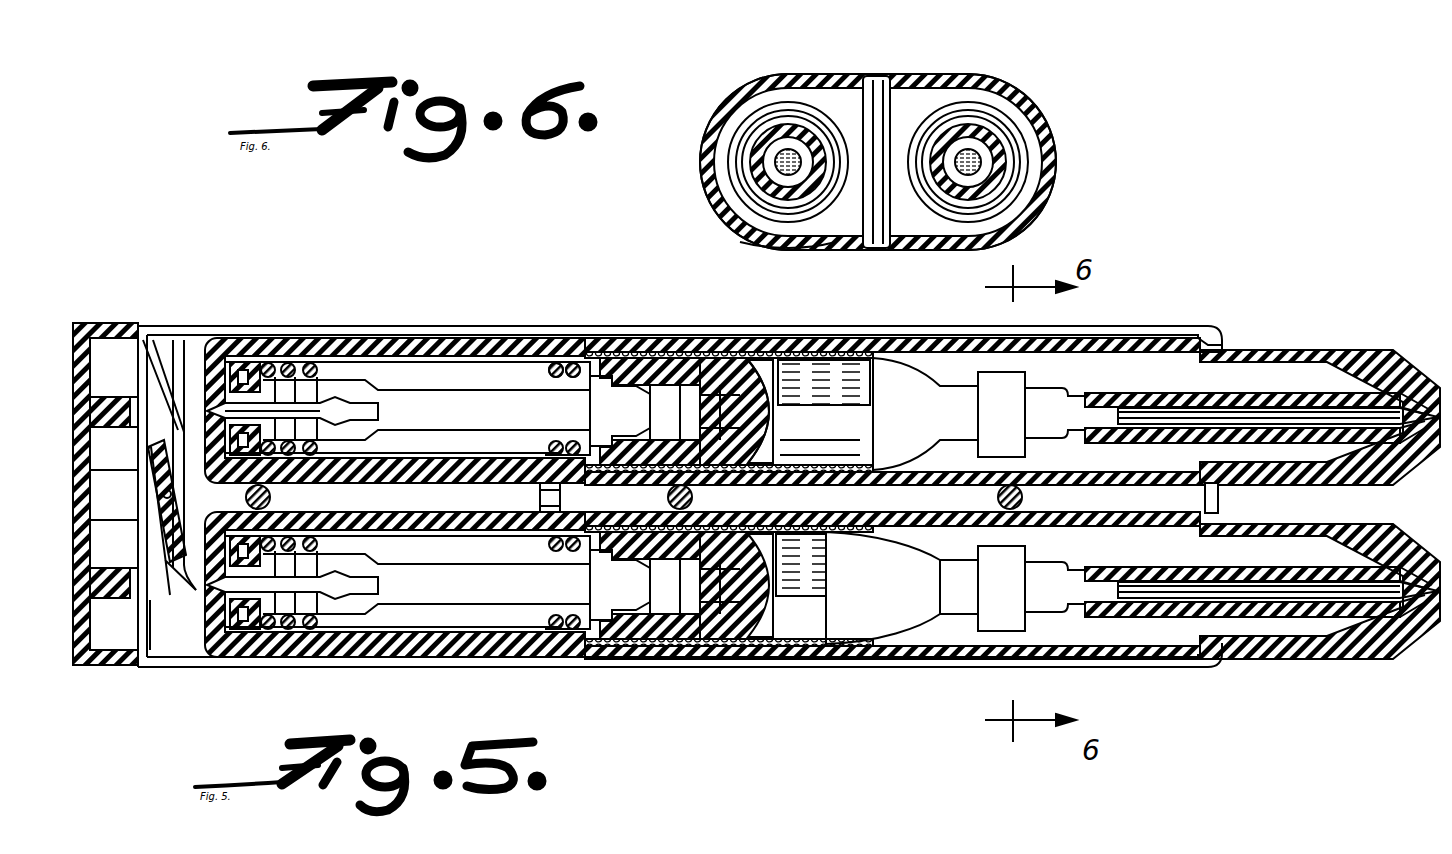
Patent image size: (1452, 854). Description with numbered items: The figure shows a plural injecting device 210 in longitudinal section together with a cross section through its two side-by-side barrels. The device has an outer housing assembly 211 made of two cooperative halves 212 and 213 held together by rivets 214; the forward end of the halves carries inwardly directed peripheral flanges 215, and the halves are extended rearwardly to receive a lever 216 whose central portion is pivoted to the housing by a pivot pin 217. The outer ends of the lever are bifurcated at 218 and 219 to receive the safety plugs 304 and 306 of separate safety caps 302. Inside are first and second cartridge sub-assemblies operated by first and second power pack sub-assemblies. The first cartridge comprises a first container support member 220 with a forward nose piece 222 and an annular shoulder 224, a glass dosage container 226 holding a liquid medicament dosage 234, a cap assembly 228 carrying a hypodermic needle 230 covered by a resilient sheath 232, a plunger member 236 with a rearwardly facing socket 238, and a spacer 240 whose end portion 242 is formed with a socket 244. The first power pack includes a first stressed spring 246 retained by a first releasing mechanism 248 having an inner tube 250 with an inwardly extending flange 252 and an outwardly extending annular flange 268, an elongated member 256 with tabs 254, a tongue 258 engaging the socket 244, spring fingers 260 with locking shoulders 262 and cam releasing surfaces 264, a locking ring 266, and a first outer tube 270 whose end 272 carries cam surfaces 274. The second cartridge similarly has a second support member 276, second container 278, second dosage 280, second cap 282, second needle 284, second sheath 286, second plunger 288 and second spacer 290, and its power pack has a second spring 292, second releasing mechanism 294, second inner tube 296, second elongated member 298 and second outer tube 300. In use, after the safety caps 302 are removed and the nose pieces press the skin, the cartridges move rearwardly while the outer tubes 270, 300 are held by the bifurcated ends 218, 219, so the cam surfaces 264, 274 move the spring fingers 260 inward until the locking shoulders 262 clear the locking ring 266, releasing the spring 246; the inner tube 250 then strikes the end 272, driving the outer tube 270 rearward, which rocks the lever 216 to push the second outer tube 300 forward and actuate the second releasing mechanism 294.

In FIG. 6, the plural injecting device 210 is at (1043, 108).
In FIG. 5, the plural injecting device 210 is at (545, 330).
In FIG. 6, the outer housing assembly 211 is at (745, 96).
In FIG. 5, the outer housing assembly 211 is at (690, 350).
In FIG. 6, the housing half 212 is at (795, 250).
In FIG. 5, the housing half 212 is at (620, 338).
In FIG. 6, the housing half 213 is at (848, 86).
In FIG. 6, the rivets 214 is at (902, 100).
In FIG. 5, the rivets 214 is at (272, 497).
In FIG. 5, the inwardly directed peripheral flanges 215 is at (1222, 345).
In FIG. 5, the lever 216 is at (160, 545).
In FIG. 5, the pivot pin 217 is at (203, 496).
In FIG. 5, the bifurcated end 218 is at (145, 330).
In FIG. 5, the bifurcated end 219 is at (176, 623).
In FIG. 6, the first container support member 220 is at (712, 136).
In FIG. 5, the first container support member 220 is at (912, 348).
In FIG. 5, the nose piece 222 is at (1372, 352).
In FIG. 5, the annular shoulder 224 is at (1222, 492).
In FIG. 5, the dosage container 226 is at (735, 350).
In FIG. 6, the cap assembly 228 is at (748, 156).
In FIG. 5, the cap assembly 228 is at (978, 401).
In FIG. 5, the hypodermic needle 230 is at (1150, 410).
In FIG. 5, the resilient sheath 232 is at (1258, 410).
In FIG. 6, the liquid medicament dosage 234 is at (742, 214).
In FIG. 5, the liquid medicament dosage 234 is at (800, 358).
In FIG. 5, the plunger member 236 is at (762, 440).
In FIG. 5, the rearwardly facing socket 238 is at (762, 400).
In FIG. 5, the spacer 240 is at (598, 350).
In FIG. 5, the plug 242 is at (663, 412).
In FIG. 5, the socket 244 is at (560, 378).
In FIG. 5, the first stressed spring 246 is at (328, 345).
In FIG. 5, the first releasing mechanism 248 is at (468, 345).
In FIG. 5, the inner tube 250 is at (520, 362).
In FIG. 5, the radially inwardly extending flange 252 is at (360, 388).
In FIG. 5, the outwardly extending tabs 254 is at (592, 447).
In FIG. 5, the first elongated member 256 is at (447, 382).
In FIG. 5, the tongue 258 is at (628, 425).
In FIG. 5, the spring fingers 260 is at (367, 427).
In FIG. 5, the locking shoulders 262 is at (353, 408).
In FIG. 5, the cam releasing surfaces 264 is at (210, 338).
In FIG. 5, the locking ring 266 is at (272, 409).
In FIG. 5, the annular flange 268 is at (540, 486).
In FIG. 5, the first outer tube 270 is at (355, 345).
In FIG. 5, the end of outer tube 272 is at (180, 330).
In FIG. 5, the cam surfaces 274 is at (196, 338).
In FIG. 6, the second support member 276 is at (1040, 150).
In FIG. 5, the second support member 276 is at (822, 660).
In FIG. 5, the second container 278 is at (930, 640).
In FIG. 6, the second dosage 280 is at (985, 160).
In FIG. 5, the second dosage 280 is at (822, 565).
In FIG. 6, the second cap 282 is at (992, 200).
In FIG. 5, the second cap 282 is at (978, 582).
In FIG. 5, the second needle 284 is at (1262, 640).
In FIG. 5, the second sheath 286 is at (1332, 650).
In FIG. 5, the second plunger 288 is at (760, 665).
In FIG. 5, the second spacer 290 is at (620, 665).
In FIG. 5, the second spring 292 is at (588, 585).
In FIG. 5, the second releasing mechanism 294 is at (530, 660).
In FIG. 5, the second inner tube 296 is at (342, 594).
In FIG. 5, the second elongated member 298 is at (420, 660).
In FIG. 5, the second outer tube 300 is at (342, 660).
In FIG. 5, the safety cap 302 is at (88, 316).
In FIG. 5, the safety plug 304 is at (150, 330).
In FIG. 5, the safety plug 306 is at (112, 512).